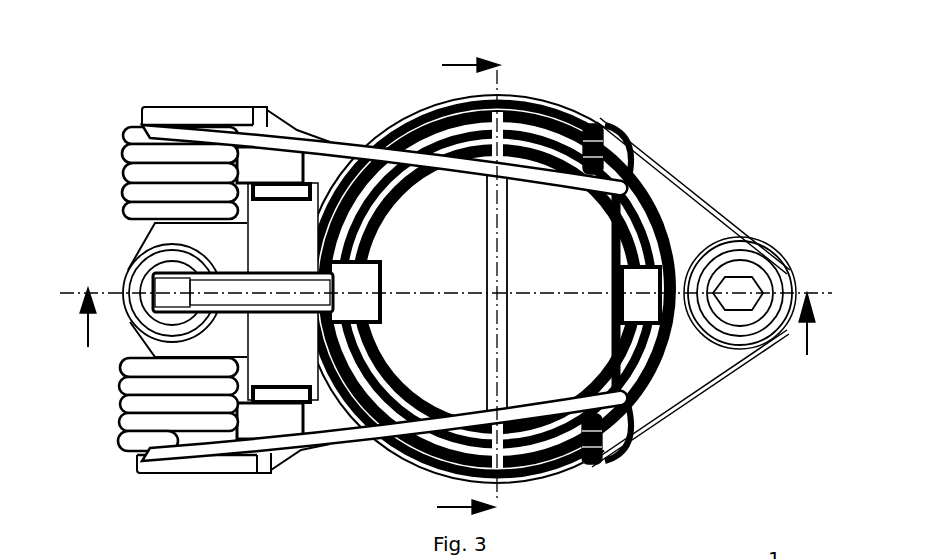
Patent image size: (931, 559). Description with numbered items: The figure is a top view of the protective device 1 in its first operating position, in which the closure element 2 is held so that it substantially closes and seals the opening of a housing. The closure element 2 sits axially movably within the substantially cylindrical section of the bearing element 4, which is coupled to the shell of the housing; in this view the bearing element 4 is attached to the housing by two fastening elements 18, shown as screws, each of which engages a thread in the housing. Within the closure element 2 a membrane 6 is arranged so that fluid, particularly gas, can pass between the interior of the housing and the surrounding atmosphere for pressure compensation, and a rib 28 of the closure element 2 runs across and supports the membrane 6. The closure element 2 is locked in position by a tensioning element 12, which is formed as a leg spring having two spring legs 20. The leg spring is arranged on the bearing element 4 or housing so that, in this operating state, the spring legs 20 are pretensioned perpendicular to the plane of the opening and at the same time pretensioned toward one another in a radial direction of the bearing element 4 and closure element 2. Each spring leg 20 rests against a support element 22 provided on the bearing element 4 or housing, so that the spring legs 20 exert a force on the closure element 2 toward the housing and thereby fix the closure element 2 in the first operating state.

The protective device 1 is at (446, 287).
The closure element 2 is at (402, 147).
The bearing element 4 is at (647, 395).
The membrane 6 is at (441, 331).
The tensioning element 12 is at (133, 180).
The fastening element 18 is at (143, 263).
The spring leg 20 is at (353, 140).
The support element 22 is at (600, 123).
The rib 28 is at (487, 255).